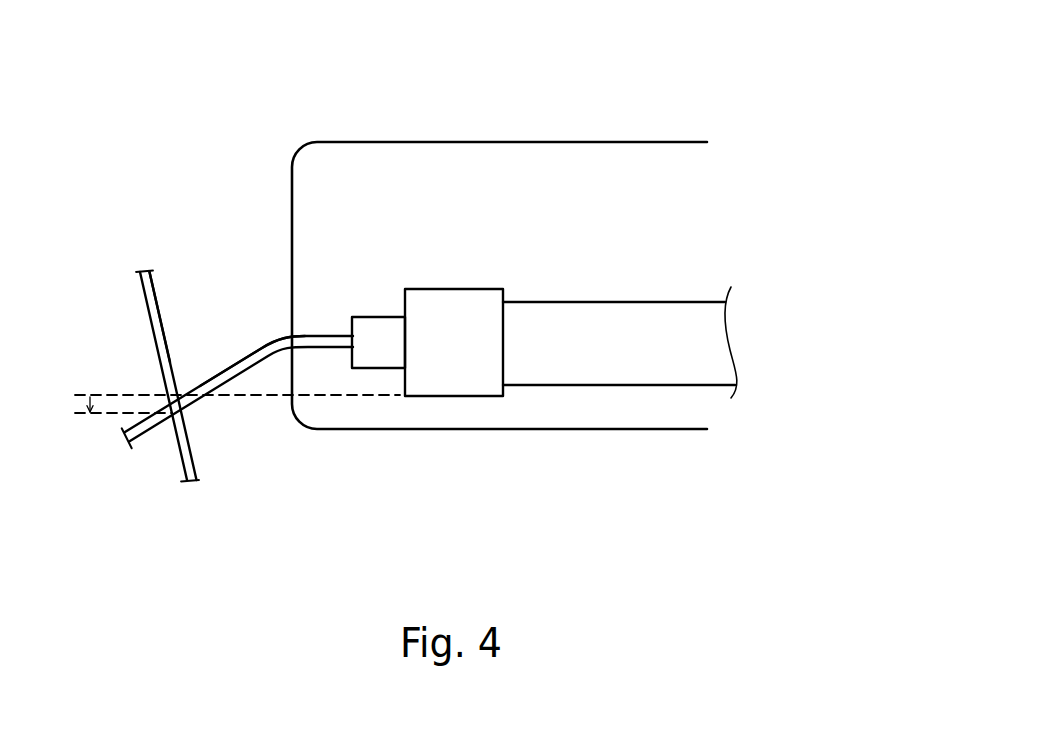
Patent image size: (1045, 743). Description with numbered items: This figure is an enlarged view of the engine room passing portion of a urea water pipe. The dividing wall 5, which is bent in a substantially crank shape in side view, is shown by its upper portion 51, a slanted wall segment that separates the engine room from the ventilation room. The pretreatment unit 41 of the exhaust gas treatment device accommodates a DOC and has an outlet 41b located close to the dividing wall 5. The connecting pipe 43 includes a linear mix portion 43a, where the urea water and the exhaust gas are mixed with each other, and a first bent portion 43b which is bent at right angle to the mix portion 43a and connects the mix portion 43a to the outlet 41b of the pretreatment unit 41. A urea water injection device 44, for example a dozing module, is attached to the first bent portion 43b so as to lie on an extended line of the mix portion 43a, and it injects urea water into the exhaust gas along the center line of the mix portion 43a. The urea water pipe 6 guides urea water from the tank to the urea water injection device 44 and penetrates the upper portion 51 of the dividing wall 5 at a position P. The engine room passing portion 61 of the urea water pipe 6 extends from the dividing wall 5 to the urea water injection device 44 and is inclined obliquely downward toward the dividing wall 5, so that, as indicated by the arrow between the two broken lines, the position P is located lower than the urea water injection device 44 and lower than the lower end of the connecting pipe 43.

The dividing wall 5 is at (157, 350).
The upper portion 51 is at (163, 330).
The urea water pipe 6 is at (149, 433).
The engine room passing portion 61 is at (242, 365).
The pretreatment unit 41 is at (582, 207).
The outlet 41b is at (452, 303).
The connecting pipe 43 is at (654, 382).
The mix portion 43a is at (652, 353).
The first bent portion 43b is at (454, 203).
The urea water injection device 44 is at (380, 352).
The position P is at (182, 412).